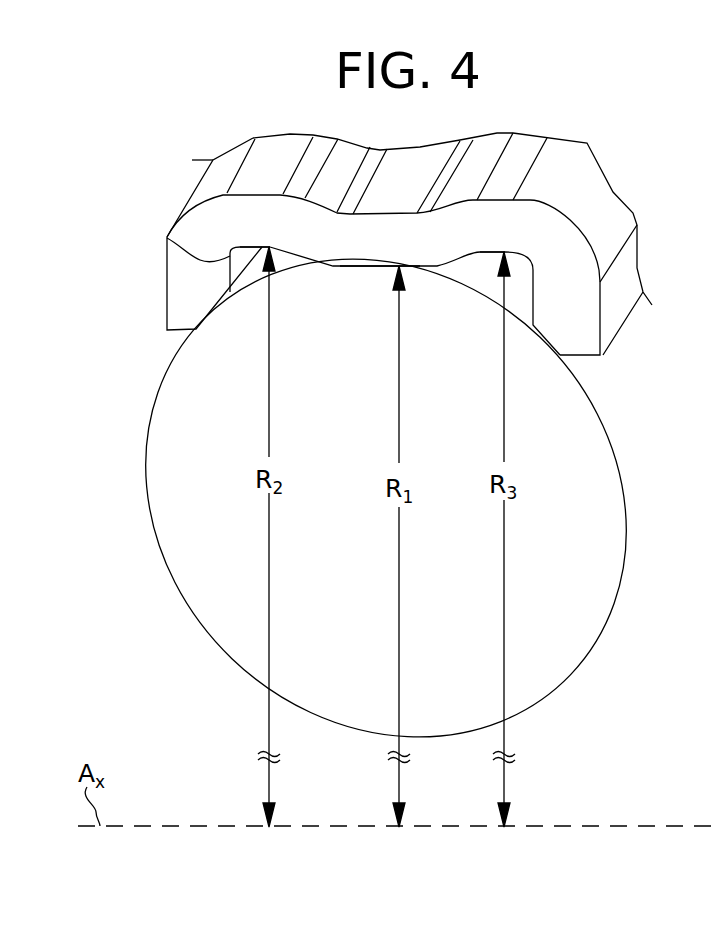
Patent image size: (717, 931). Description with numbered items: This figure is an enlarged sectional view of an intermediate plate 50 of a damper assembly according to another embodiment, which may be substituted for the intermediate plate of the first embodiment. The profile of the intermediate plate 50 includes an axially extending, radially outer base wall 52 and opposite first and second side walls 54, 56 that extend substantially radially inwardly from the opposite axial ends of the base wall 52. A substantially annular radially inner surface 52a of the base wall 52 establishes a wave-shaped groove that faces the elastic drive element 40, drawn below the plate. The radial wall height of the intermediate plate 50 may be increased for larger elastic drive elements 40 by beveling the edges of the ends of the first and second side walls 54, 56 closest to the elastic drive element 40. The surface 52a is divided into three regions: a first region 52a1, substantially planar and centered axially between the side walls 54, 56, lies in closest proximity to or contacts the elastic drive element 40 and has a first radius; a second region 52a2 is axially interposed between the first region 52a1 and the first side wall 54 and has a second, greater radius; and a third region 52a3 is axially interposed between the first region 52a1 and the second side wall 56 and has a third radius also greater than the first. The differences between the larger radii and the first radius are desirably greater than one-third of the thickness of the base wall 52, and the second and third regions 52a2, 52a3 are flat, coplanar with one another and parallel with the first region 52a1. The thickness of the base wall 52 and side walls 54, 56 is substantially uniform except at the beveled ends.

The elastic drive element 40 is at (150, 524).
The intermediate plate 50 is at (146, 175).
The radially outer base wall 52 is at (341, 279).
The radially inner surface 52a is at (300, 276).
The first region 52a1 is at (368, 267).
The second region 52a2 is at (167, 236).
The third region 52a3 is at (496, 256).
The first side wall 54 is at (195, 281).
The second side wall 56 is at (572, 308).